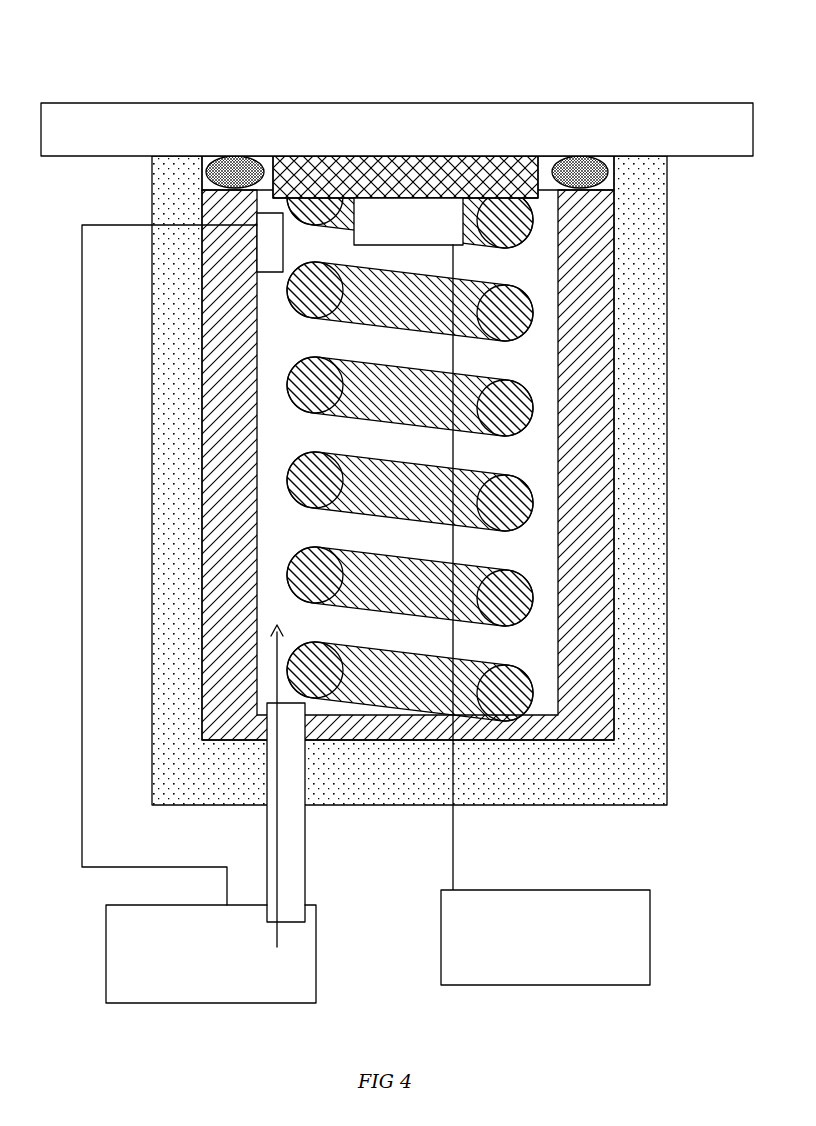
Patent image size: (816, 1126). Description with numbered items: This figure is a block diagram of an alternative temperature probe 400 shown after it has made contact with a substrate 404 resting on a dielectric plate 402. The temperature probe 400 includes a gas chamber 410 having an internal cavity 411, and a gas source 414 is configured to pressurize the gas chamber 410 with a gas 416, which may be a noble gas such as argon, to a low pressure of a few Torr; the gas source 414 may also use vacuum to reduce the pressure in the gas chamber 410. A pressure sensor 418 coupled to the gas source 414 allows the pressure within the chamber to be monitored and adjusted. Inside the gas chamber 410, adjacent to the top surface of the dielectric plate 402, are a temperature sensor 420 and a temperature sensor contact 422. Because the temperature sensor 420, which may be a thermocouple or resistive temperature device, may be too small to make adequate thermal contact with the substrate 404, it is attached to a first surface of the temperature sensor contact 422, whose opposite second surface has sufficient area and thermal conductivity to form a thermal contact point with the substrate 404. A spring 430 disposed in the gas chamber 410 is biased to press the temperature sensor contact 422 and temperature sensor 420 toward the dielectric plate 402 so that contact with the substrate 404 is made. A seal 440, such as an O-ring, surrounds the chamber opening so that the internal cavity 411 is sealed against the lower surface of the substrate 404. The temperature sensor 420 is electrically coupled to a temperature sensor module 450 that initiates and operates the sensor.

The temperature probe 400 is at (128, 23).
The dielectric plate 402 is at (625, 267).
The substrate 404 is at (122, 138).
The gas chamber 410 is at (592, 415).
The internal cavity 411 is at (407, 452).
The gas source 414 is at (106, 945).
The gas 416 is at (165, 938).
The pressure sensor 418 is at (268, 240).
The temperature sensor 420 is at (420, 215).
The temperature sensor contact 422 is at (370, 175).
The spring 430 is at (508, 495).
The seal 440 is at (590, 165).
The temperature sensor module 450 is at (600, 928).